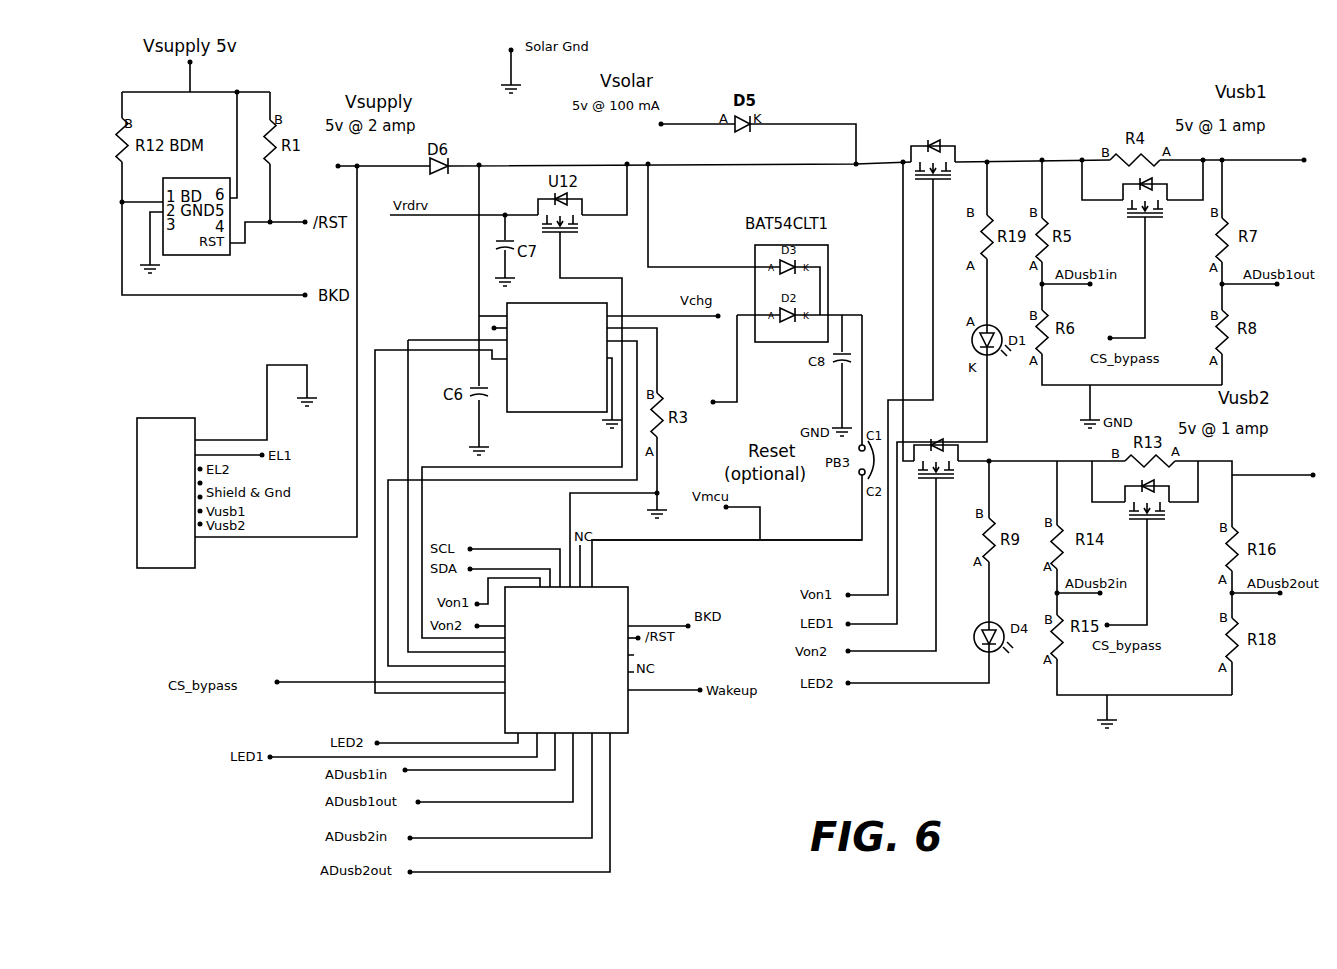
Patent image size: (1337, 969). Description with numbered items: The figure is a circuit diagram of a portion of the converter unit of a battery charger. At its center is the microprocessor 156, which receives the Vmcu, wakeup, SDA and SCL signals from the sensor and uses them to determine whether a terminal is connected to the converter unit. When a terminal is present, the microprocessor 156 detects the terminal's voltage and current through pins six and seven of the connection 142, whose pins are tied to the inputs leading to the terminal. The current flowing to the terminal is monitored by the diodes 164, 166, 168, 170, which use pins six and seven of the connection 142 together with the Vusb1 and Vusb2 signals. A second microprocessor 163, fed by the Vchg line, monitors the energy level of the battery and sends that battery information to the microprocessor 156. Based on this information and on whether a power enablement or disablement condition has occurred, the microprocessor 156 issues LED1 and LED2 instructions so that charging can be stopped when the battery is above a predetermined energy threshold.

The connection 142 is at (197, 553).
The microprocessor 156 is at (628, 600).
The microprocessor 163 is at (507, 305).
The diode 164 is at (1130, 188).
The diode 166 is at (953, 142).
The diode 168 is at (1132, 490).
The diode 170 is at (944, 450).